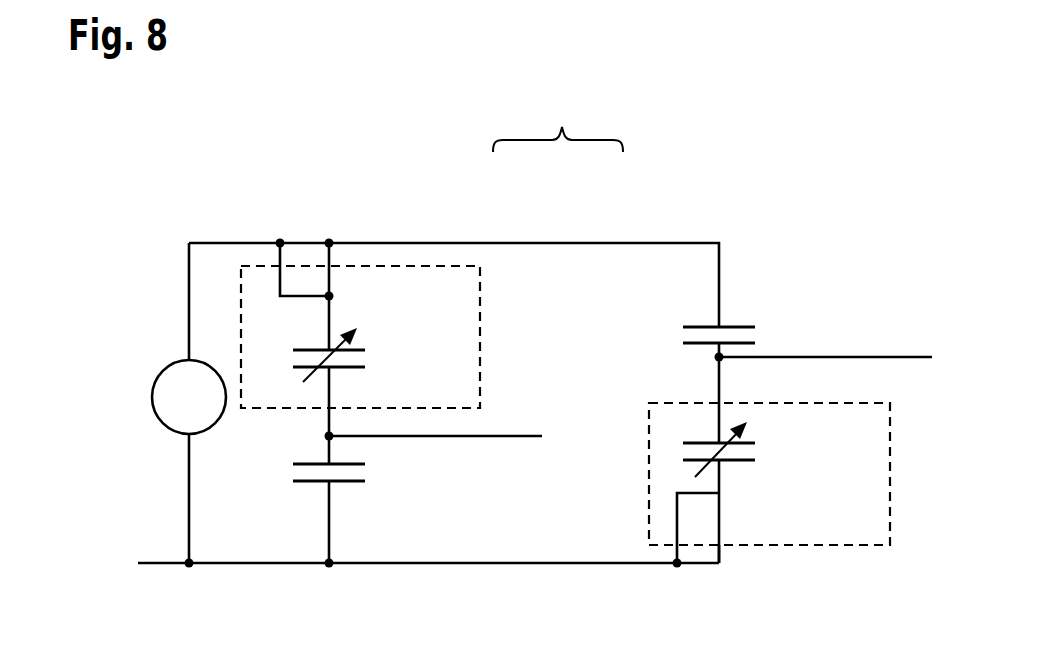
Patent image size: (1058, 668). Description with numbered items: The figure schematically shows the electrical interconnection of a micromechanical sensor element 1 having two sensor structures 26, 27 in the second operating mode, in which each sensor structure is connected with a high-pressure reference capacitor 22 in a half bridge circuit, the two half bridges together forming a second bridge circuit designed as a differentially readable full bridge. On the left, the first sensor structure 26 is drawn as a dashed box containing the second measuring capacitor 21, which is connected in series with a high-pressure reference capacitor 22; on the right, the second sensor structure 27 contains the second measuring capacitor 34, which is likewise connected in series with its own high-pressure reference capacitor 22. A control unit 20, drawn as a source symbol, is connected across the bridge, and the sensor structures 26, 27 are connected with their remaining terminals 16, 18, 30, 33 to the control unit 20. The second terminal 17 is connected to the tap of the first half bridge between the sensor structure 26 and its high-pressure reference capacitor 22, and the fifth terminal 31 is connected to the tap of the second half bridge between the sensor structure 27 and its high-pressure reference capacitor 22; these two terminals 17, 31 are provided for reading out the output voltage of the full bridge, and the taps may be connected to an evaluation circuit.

The micromechanical sensor element 1 is at (558, 123).
The first terminal 16 is at (282, 265).
The second terminal 17 is at (330, 408).
The third terminal 18 is at (330, 265).
The control unit 20 is at (163, 367).
The second measuring capacitor 21 is at (350, 368).
The high-pressure reference capacitor 22 is at (347, 482).
The first sensor structure 26 is at (480, 300).
The second sensor structure 27 is at (671, 403).
The terminal 30 is at (672, 548).
The fifth terminal 31 is at (722, 400).
The terminal 33 is at (723, 548).
The second measuring capacitor 34 is at (735, 462).